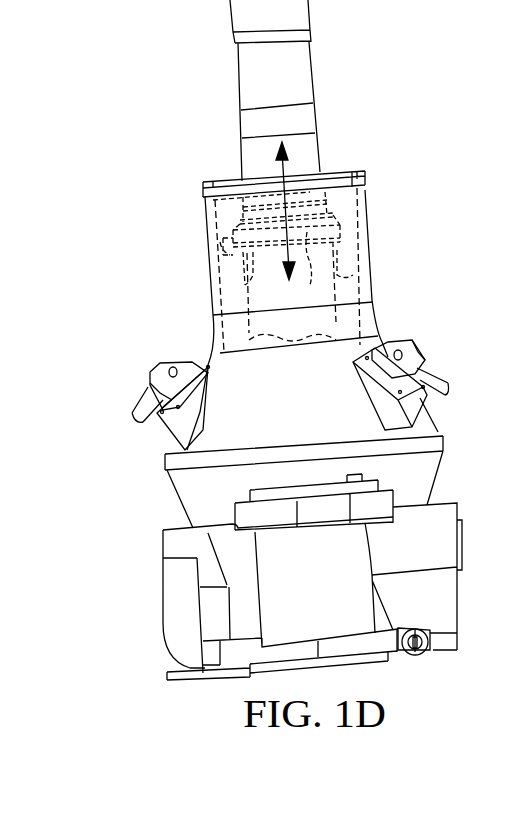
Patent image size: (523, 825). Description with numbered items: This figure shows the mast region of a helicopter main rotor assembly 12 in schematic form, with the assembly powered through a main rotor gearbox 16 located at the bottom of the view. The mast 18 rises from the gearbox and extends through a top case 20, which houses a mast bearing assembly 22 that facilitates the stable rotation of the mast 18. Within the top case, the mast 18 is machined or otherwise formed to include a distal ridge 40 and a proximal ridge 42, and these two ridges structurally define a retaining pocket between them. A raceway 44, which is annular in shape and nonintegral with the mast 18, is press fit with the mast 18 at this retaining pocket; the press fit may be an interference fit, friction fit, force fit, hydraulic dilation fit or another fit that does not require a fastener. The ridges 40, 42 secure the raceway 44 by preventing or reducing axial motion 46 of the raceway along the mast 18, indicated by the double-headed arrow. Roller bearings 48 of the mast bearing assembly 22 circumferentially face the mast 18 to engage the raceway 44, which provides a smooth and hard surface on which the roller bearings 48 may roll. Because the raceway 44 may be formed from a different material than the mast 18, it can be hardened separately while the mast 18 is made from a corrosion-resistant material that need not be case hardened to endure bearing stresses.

The main rotor assembly 12 is at (110, 188).
The main rotor gearbox 16 is at (163, 596).
The mast 18 is at (338, 270).
The top case 20 is at (205, 207).
The mast bearing assembly 22 is at (347, 212).
The distal ridge 40 is at (210, 218).
The proximal ridge 42 is at (213, 293).
The raceway 44 is at (304, 284).
The axial motion 46 is at (280, 163).
The roller bearings 48 is at (210, 257).